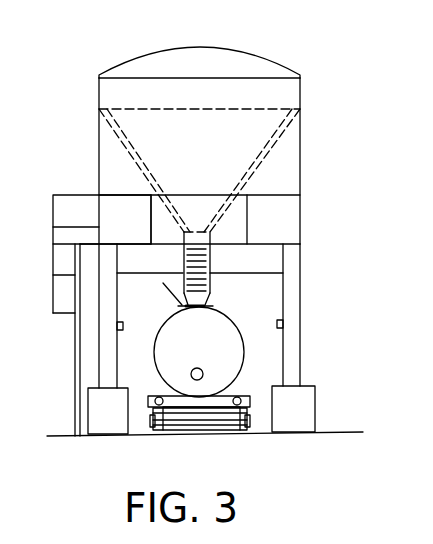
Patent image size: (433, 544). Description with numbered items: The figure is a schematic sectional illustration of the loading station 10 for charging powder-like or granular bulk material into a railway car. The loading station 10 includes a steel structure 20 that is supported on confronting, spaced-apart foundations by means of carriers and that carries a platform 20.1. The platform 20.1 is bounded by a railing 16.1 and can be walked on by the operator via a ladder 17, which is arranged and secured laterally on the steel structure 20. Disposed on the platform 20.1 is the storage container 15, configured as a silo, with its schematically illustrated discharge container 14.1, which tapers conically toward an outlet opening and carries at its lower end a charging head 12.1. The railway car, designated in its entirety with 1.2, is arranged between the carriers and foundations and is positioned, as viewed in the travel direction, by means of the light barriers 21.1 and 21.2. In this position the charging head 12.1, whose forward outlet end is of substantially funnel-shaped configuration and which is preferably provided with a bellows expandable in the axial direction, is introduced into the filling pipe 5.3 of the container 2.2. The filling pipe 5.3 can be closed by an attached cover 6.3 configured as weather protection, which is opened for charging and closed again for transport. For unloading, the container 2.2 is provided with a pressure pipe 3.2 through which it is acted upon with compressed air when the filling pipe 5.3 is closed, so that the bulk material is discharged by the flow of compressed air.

The loading station 10 is at (78, 112).
The storage container 15 is at (262, 70).
The discharge container 14.1 is at (275, 136).
The railing 16.1 is at (68, 195).
The ladder 17 is at (75, 380).
The platform 20.1 is at (268, 243).
The steel structure 20 is at (307, 297).
The light barrier 21.1 is at (283, 324).
The light barrier 21.2 is at (116, 326).
The charging head 12.1 is at (213, 290).
The filling pipe 5.3 is at (197, 308).
The cover 6.3 is at (168, 292).
The container 2.2 is at (165, 363).
The pressure pipe 3.2 is at (196, 381).
The railway car 1.2 is at (247, 382).